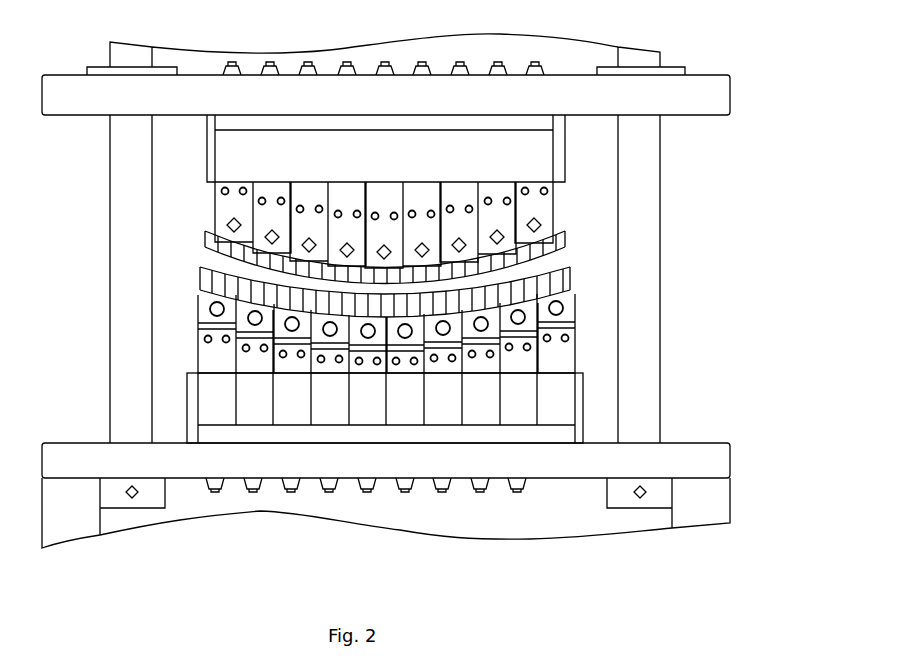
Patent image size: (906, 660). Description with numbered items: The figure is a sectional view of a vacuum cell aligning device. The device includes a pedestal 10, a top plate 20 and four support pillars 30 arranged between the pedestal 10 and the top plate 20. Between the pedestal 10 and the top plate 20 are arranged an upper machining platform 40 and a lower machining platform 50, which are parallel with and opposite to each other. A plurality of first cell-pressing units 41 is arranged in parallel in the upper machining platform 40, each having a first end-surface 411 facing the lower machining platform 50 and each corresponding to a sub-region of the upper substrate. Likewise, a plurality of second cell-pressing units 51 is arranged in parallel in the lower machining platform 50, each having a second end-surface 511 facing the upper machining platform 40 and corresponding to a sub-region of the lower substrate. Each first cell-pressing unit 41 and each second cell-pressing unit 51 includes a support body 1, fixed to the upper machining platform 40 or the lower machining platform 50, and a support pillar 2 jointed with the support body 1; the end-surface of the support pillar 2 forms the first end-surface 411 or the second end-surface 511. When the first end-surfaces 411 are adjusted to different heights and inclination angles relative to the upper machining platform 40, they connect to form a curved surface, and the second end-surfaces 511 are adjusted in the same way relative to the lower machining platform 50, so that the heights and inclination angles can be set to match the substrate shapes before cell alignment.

The pedestal 10 is at (670, 468).
The top plate 20 is at (580, 100).
The support pillars 30 is at (640, 324).
The upper machining platform 40 is at (565, 147).
The first cell-pressing unit 41 is at (557, 233).
The first end-surface 411 is at (214, 248).
The lower machining platform 50 is at (563, 413).
The second cell-pressing unit 51 is at (575, 347).
The second end-surface 511 is at (546, 270).
The support body 1 is at (214, 215).
The support pillar 2 is at (212, 237).